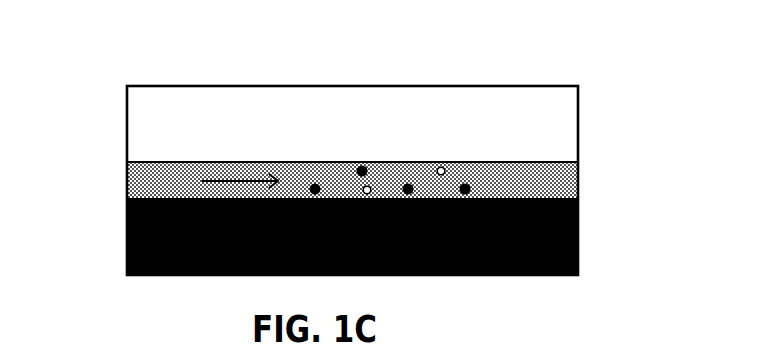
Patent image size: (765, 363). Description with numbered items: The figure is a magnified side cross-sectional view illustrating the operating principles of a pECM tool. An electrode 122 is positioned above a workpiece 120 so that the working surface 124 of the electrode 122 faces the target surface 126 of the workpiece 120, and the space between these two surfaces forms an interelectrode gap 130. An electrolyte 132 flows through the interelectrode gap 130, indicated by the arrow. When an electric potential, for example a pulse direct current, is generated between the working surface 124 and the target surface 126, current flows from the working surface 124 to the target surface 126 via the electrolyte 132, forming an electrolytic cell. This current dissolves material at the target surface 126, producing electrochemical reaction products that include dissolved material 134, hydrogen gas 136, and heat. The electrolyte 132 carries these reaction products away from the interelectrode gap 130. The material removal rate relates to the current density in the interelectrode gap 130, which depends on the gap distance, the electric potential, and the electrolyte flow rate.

The workpiece 120 is at (578, 252).
The electrode 122 is at (503, 86).
The working surface 124 is at (540, 162).
The target surface 126 is at (568, 192).
The interelectrode gap 130 is at (118, 162).
The electrolyte 132 is at (238, 172).
The dissolved material 134 is at (315, 185).
The hydrogen gas 136 is at (438, 166).